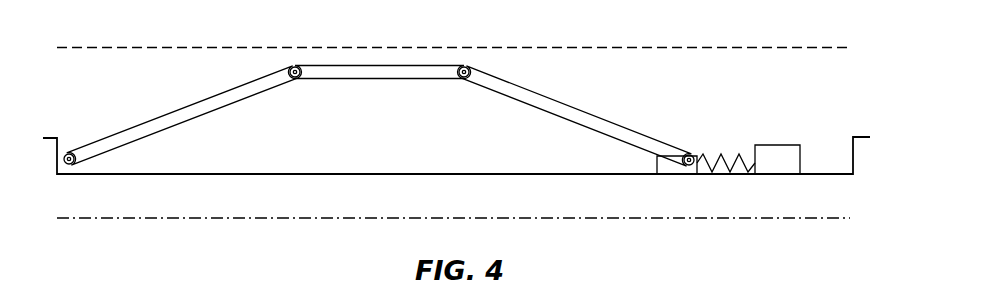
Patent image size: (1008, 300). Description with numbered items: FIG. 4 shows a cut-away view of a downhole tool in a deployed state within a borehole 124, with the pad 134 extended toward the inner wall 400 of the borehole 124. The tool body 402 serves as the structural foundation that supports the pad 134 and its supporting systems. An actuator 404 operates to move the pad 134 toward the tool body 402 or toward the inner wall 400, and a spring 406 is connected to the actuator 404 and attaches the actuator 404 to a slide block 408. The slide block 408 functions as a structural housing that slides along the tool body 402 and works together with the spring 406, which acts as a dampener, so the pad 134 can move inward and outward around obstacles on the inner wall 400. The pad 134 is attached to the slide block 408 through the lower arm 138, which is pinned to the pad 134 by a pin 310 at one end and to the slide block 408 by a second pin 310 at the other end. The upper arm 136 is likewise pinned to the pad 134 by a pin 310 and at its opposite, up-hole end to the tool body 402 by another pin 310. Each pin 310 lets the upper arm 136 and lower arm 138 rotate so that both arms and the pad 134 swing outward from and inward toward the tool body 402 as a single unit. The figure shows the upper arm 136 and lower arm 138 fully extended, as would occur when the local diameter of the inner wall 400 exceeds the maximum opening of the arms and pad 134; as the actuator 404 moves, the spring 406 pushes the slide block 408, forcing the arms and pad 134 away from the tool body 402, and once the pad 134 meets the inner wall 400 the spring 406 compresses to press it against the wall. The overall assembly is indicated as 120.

The vehicle seat assembly 120 is at (802, 105).
The borehole 124 is at (112, 26).
The pad 134 is at (370, 66).
The upper arm 136 is at (192, 108).
The lower arm 138 is at (548, 105).
The pin 310 is at (73, 154).
The inner wall 400 is at (667, 48).
The tool body 402 is at (477, 208).
The actuator 404 is at (778, 145).
The spring 406 is at (723, 170).
The slide block 408 is at (657, 169).